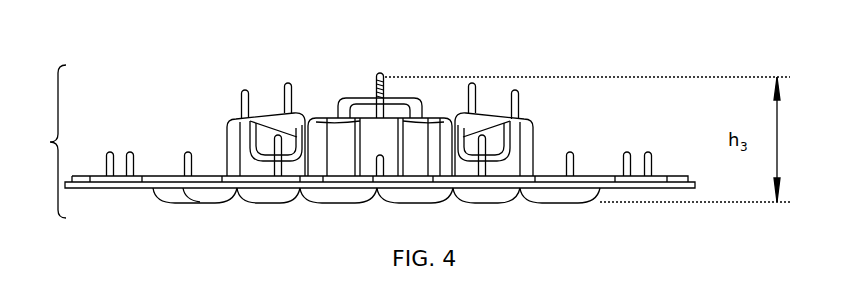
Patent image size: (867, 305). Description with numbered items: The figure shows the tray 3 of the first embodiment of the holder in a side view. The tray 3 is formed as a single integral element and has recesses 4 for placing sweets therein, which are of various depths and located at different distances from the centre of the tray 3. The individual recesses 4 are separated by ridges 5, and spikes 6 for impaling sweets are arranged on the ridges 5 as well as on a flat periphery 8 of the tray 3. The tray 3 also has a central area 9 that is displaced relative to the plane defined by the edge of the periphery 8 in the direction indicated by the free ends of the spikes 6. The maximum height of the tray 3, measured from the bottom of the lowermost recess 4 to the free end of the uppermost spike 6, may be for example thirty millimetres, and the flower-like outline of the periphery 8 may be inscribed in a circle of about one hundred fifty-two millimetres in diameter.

The tray 3 is at (46, 141).
The recesses 4 is at (300, 192).
The ridges 5 is at (320, 121).
The spikes 6 is at (240, 100).
The flat periphery 8 is at (96, 188).
The central area 9 is at (356, 112).